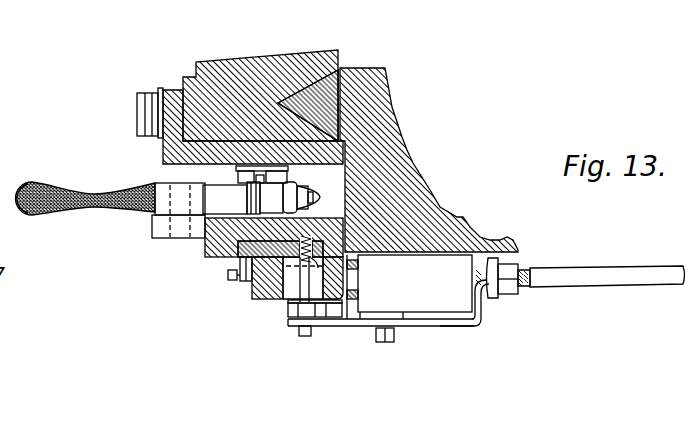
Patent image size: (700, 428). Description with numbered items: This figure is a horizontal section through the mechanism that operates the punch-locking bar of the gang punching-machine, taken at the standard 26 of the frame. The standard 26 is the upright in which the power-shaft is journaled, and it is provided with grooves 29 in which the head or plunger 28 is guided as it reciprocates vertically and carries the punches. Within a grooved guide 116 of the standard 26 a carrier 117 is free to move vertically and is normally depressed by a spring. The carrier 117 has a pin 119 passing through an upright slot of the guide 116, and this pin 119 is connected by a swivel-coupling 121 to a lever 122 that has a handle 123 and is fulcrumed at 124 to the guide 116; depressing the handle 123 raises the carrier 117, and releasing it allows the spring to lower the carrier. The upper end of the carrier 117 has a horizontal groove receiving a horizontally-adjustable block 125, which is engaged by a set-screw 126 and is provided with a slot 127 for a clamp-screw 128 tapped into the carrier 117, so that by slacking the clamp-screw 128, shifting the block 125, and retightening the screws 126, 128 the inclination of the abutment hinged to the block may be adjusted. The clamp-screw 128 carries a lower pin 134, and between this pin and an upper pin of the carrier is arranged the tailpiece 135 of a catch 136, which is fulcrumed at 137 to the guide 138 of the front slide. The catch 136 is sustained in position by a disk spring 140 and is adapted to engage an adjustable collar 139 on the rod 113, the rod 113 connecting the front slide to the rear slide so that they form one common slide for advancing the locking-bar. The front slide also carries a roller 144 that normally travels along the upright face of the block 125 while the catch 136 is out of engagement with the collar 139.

The standard 26 is at (203, 62).
The grooves 29 is at (296, 95).
The head or plunger 28 is at (415, 188).
The grooved guide 116 is at (203, 237).
The carrier 117 is at (207, 248).
The handle 123 is at (48, 183).
The fulcrum 124 is at (177, 190).
The swivel-coupling 121 is at (262, 186).
The lever 122 is at (268, 194).
The pin 119 is at (312, 193).
The horizontally-adjustable block 125 is at (263, 298).
The slot 127 is at (293, 286).
The set-screw 126 is at (229, 279).
The clamp-screw 128 is at (309, 313).
The lower pin 134 is at (300, 338).
The tailpiece 135 is at (357, 327).
The fulcrum 137 is at (393, 339).
The disk spring 140 is at (405, 330).
The guide 138 is at (415, 283).
The roller 144 is at (360, 278).
The catch 136 is at (481, 316).
The adjustable collar 139 is at (498, 292).
The rod 113 is at (604, 276).